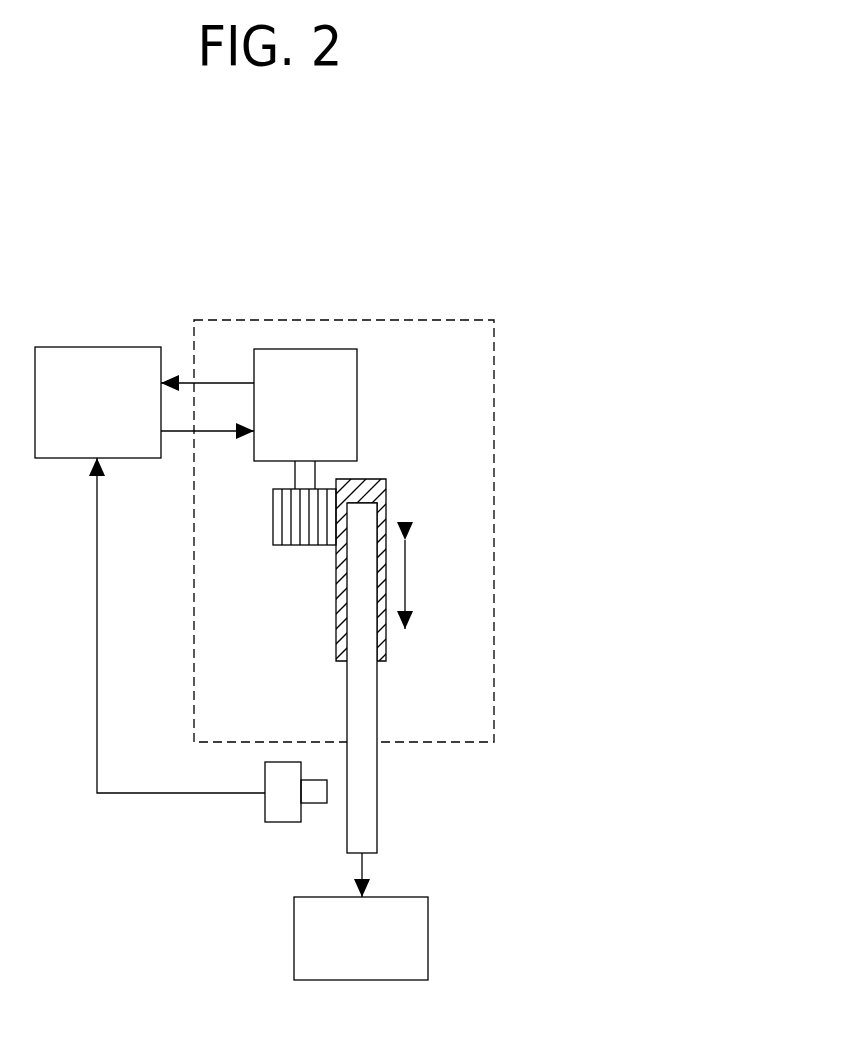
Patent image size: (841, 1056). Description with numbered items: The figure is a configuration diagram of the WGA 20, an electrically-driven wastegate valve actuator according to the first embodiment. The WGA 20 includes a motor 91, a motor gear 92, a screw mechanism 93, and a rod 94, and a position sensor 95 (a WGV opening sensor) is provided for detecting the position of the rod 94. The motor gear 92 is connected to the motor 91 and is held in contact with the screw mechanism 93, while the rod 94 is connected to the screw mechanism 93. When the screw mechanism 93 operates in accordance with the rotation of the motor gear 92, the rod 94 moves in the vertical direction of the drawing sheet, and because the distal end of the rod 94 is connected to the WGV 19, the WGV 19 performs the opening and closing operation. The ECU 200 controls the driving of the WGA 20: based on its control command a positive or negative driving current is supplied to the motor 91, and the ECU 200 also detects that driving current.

The ECU 200 is at (107, 347).
The WGA 20 is at (343, 318).
The motor 91 is at (357, 404).
The motor gear 92 is at (277, 518).
The screw mechanism 93 is at (362, 478).
The rod 94 is at (377, 722).
The position sensor 95 is at (284, 822).
The WGV 19 is at (428, 940).